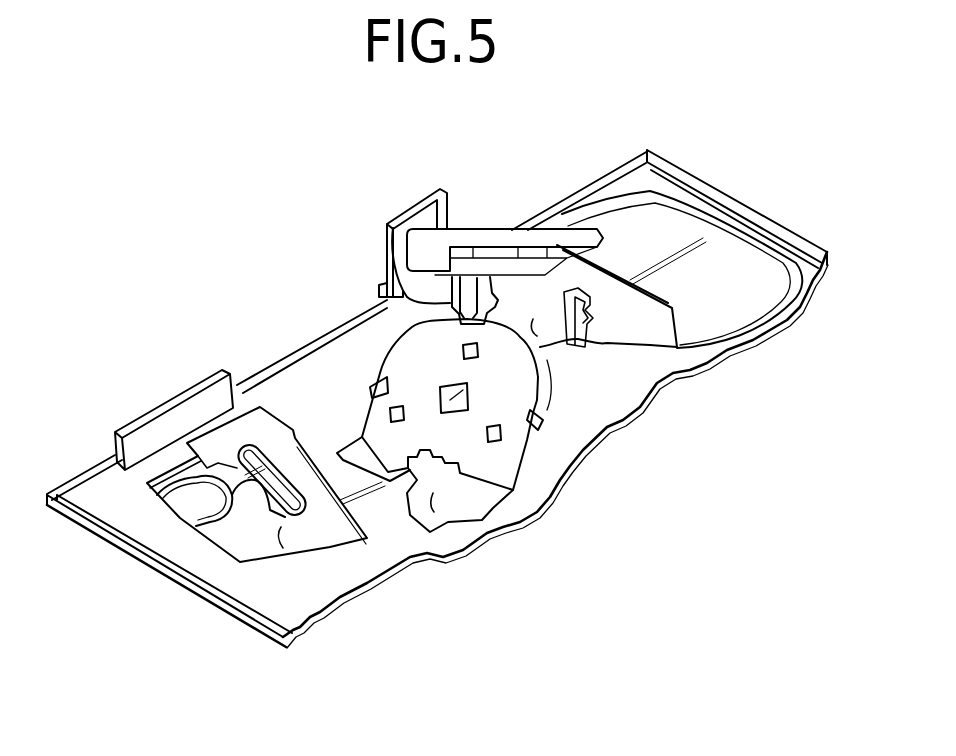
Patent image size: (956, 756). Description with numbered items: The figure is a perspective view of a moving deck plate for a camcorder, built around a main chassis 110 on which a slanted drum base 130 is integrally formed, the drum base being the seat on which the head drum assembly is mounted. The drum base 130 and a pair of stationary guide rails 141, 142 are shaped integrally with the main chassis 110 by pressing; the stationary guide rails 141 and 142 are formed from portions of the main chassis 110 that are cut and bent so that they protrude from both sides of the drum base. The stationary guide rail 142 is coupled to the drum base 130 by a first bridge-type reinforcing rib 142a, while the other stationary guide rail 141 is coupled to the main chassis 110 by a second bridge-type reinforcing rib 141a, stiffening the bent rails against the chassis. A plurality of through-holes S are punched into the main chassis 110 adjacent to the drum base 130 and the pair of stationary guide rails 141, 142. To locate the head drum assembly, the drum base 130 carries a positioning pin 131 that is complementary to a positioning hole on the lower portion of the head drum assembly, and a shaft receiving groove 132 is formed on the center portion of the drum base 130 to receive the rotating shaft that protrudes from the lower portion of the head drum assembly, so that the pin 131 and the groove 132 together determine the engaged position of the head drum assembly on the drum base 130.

The main chassis 110 is at (697, 370).
The drum base 130 is at (398, 322).
The positioning pin 131 is at (410, 470).
The shaft receiving groove 132 is at (457, 397).
The stationary guide rail 141 is at (227, 422).
The second bridge-type reinforcing rib 141a is at (231, 488).
The stationary guide rail 142 is at (481, 212).
The first bridge-type reinforcing rib 142a is at (490, 297).
The through-holes S is at (293, 541).